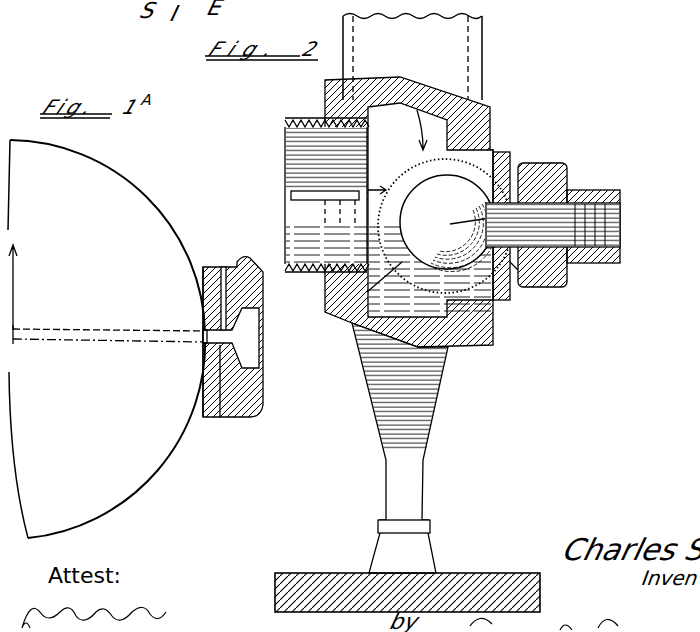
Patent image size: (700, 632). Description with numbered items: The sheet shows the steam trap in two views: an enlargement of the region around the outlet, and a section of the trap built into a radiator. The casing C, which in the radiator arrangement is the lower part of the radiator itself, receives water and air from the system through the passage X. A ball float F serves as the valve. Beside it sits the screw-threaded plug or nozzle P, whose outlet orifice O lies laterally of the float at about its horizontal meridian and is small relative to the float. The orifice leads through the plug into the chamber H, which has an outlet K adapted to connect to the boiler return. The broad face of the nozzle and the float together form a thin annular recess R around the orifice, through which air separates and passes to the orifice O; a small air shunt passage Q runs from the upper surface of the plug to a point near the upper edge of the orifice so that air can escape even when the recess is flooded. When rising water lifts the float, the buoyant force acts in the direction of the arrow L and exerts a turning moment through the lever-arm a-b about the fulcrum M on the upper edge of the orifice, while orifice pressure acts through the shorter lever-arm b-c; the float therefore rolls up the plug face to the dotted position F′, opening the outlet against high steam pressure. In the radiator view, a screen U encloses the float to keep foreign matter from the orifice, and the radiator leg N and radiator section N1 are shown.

In FIG. 1A, the float F is at (106, 339).
In FIG. 1A, the arrow indicating direction of buoyant force L is at (14, 294).
In FIG. 1A, the end point of lever-arm a-b a is at (14, 329).
In FIG. 1A, the point at fulcrum defining lever-arms a-b and b-c b is at (206, 331).
In FIG. 1A, the end point of lever-arm b- c is at (206, 342).
In FIG. 1A, the fulcrum or instant axis M is at (207, 318).
In FIG. 2, the fulcrum or instant axis M is at (452, 236).
In FIG. 1A, the annular recess R is at (203, 265).
In FIG. 2, the annular recess R is at (494, 190).
In FIG. 1A, the air shunt passage Q is at (224, 266).
In FIG. 1A, the outlet orifice O is at (220, 418).
In FIG. 2, the outlet orifice O is at (518, 270).
In FIG. 1A, the plug or nozzle P is at (263, 403).
In FIG. 2, the plug or nozzle P is at (512, 185).
In FIG. 2, the casing C is at (325, 96).
In FIG. 2, the passage X is at (377, 150).
In FIG. 2, the radiator section N1 is at (485, 27).
In FIG. 2, the screen U is at (352, 323).
In FIG. 2, the dotted-line position of float F′ is at (447, 222).
In FIG. 2, the outlet K is at (617, 227).
In FIG. 2, the chamber H is at (567, 277).
In FIG. 2, the radiator leg N is at (413, 417).